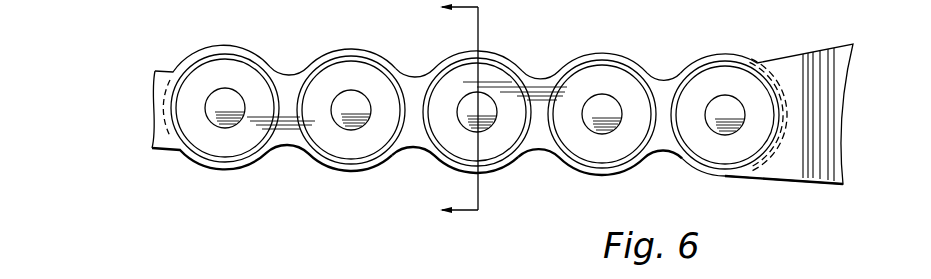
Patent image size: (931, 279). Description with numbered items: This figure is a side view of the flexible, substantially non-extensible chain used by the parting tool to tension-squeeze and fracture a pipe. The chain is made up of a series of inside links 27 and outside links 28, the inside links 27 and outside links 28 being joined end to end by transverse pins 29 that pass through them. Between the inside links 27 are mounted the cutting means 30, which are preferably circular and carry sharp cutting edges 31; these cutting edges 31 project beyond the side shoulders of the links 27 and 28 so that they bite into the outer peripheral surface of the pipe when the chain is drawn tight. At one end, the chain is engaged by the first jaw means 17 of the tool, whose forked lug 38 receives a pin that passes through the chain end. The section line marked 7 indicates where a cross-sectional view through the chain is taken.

The first jaw means 17 is at (783, 68).
The inside links 27 is at (413, 140).
The outside links 28 is at (368, 148).
The transverse pins 29 is at (597, 130).
The cutting means 30 is at (317, 65).
The cutting edges 31 is at (317, 163).
The forked lug 38 is at (747, 150).
The section line 7- 7 is at (449, 113).